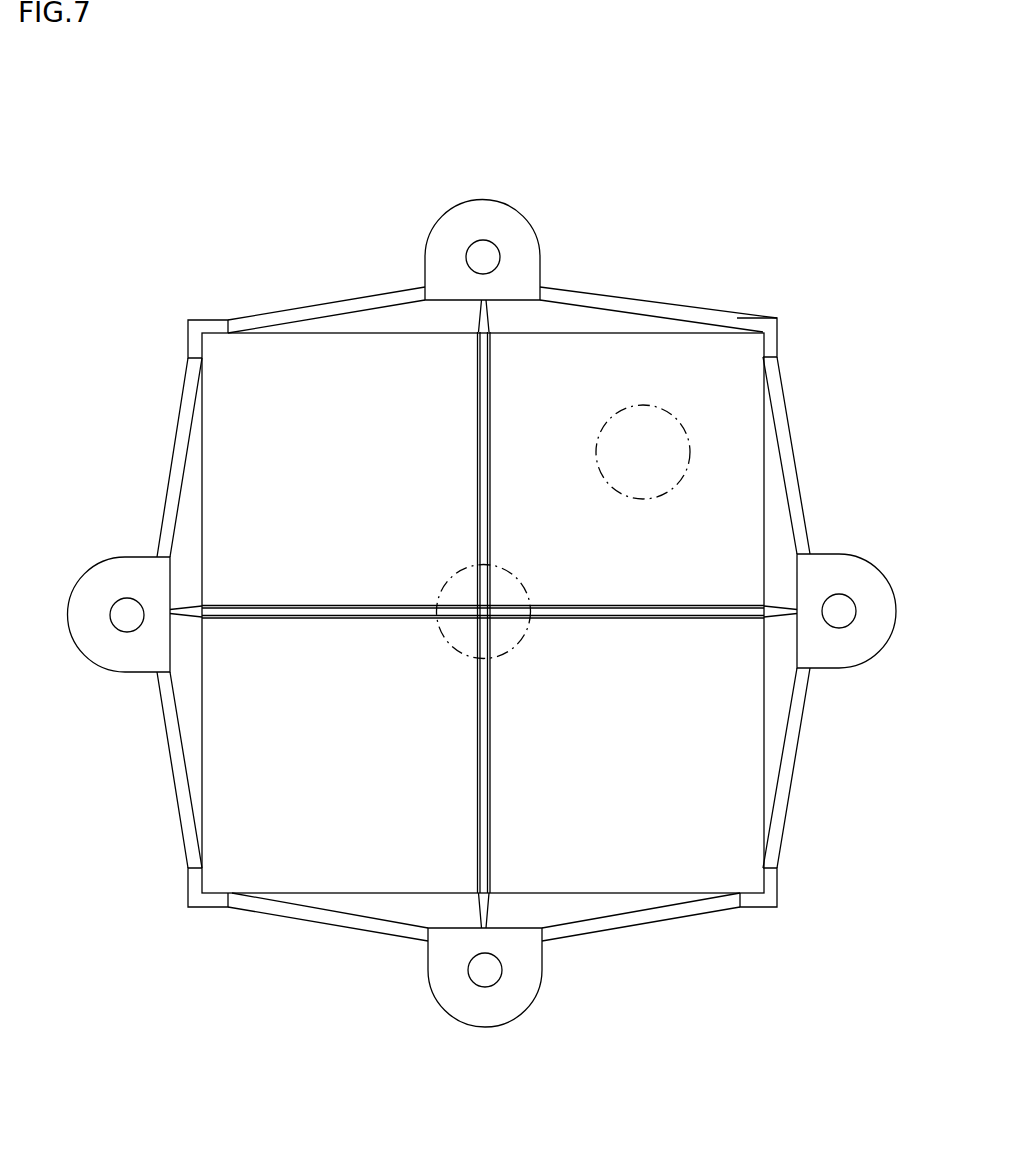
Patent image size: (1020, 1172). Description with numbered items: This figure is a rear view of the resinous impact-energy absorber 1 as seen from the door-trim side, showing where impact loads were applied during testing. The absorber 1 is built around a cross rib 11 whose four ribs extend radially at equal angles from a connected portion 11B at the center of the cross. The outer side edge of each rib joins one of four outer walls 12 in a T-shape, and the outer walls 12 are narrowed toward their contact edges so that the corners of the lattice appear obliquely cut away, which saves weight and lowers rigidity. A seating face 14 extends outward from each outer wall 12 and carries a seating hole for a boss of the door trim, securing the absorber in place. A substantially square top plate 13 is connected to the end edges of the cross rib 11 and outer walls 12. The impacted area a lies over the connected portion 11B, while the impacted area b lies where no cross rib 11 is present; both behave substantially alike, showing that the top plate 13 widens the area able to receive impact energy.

The resinous impact-energy absorber 1 is at (612, 206).
The cross rib 11 is at (490, 386).
The connected portion 11B is at (478, 620).
The outer wall 12 is at (370, 305).
The top plate 13 is at (675, 342).
The seating face 14 is at (490, 217).
The impacted area a is at (503, 660).
The impacted area b is at (667, 398).